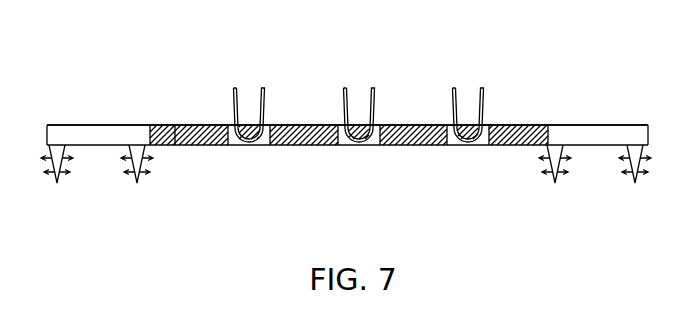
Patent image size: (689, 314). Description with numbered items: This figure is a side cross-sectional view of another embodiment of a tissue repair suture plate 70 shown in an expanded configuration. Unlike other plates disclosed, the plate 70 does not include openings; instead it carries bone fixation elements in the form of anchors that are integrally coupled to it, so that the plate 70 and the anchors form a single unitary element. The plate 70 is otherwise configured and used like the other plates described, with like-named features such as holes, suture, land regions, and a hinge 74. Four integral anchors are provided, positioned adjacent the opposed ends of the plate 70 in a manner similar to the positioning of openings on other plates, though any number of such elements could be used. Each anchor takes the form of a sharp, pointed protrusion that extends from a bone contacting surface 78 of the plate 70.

The plate 70 is at (571, 71).
The hinge 74 is at (177, 145).
The bone contacting surface 78 is at (514, 145).